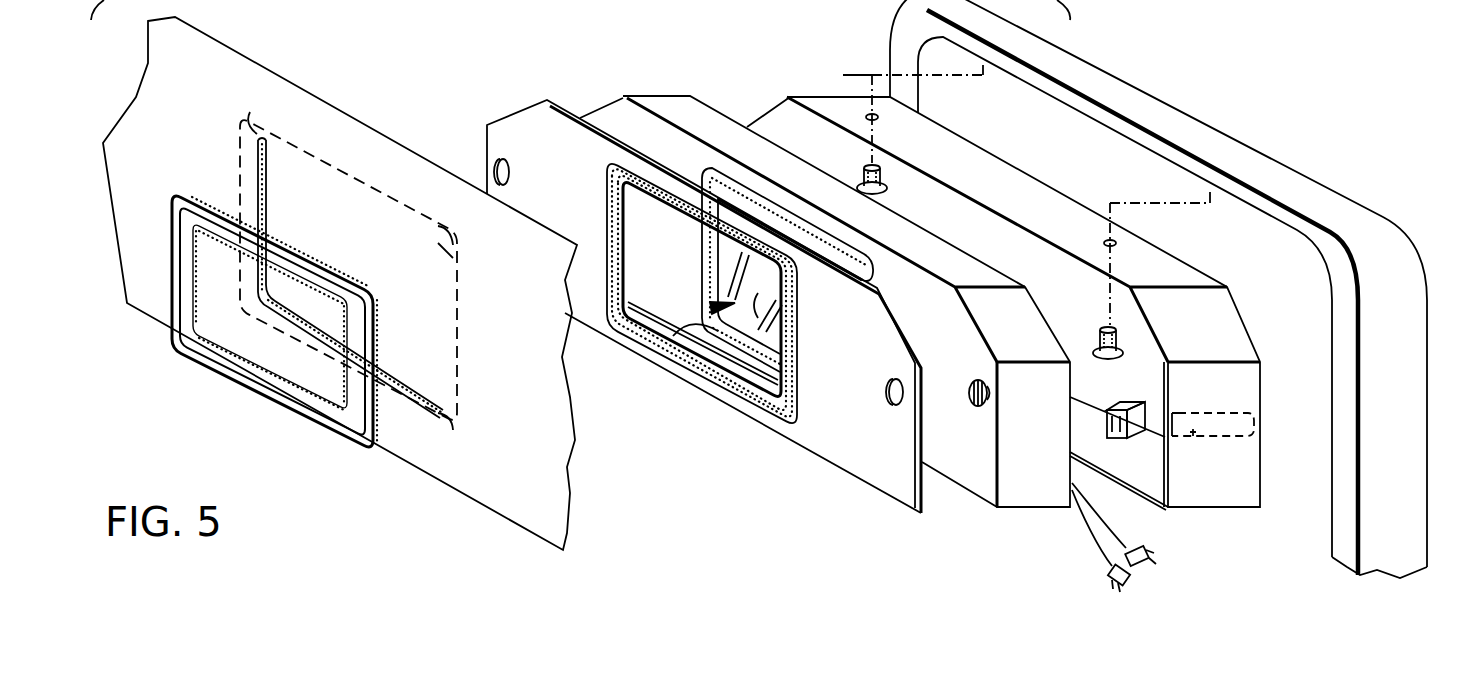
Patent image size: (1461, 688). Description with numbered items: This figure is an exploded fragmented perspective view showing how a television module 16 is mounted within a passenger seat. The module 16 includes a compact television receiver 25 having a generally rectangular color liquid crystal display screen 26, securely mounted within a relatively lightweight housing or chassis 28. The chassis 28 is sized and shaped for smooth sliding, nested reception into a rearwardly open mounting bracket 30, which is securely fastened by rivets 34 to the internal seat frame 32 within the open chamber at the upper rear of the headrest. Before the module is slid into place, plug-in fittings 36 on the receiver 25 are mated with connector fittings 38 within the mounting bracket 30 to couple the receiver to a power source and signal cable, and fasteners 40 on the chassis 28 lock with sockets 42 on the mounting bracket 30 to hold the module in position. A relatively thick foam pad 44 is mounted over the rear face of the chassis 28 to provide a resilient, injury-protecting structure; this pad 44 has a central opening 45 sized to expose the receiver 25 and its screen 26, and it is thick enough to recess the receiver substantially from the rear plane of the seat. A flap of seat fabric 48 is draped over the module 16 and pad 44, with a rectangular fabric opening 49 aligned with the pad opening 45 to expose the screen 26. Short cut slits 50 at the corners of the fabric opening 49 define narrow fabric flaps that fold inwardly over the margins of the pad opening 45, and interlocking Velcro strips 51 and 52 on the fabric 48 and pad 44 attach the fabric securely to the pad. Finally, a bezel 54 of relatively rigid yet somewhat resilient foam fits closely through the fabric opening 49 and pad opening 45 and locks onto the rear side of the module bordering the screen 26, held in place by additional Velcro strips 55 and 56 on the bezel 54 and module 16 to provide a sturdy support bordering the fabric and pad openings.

The television module 16 is at (645, 103).
The television receiver 25 is at (712, 311).
The LCD screen 26 is at (765, 318).
The housing or chassis 28 is at (1020, 468).
The mounting bracket 30 is at (1232, 318).
The seat frame 32 is at (1388, 363).
The rivets 34 is at (887, 182).
The plug-in fittings 36 is at (1107, 572).
The connector fittings 38 is at (1125, 405).
The fasteners 40 is at (980, 408).
The sockets 42 is at (1193, 436).
The foam pad 44 is at (817, 433).
The central opening 45 is at (723, 371).
The seat fabric 48 is at (545, 473).
The fabric opening 49 is at (343, 200).
The cut slits 50 is at (247, 125).
The Velcro strip 51 is at (415, 380).
The Velcro strip 52 is at (612, 290).
The bezel 54 is at (298, 417).
The Velcro strip 55 is at (330, 267).
The Velcro strip 56 is at (748, 196).